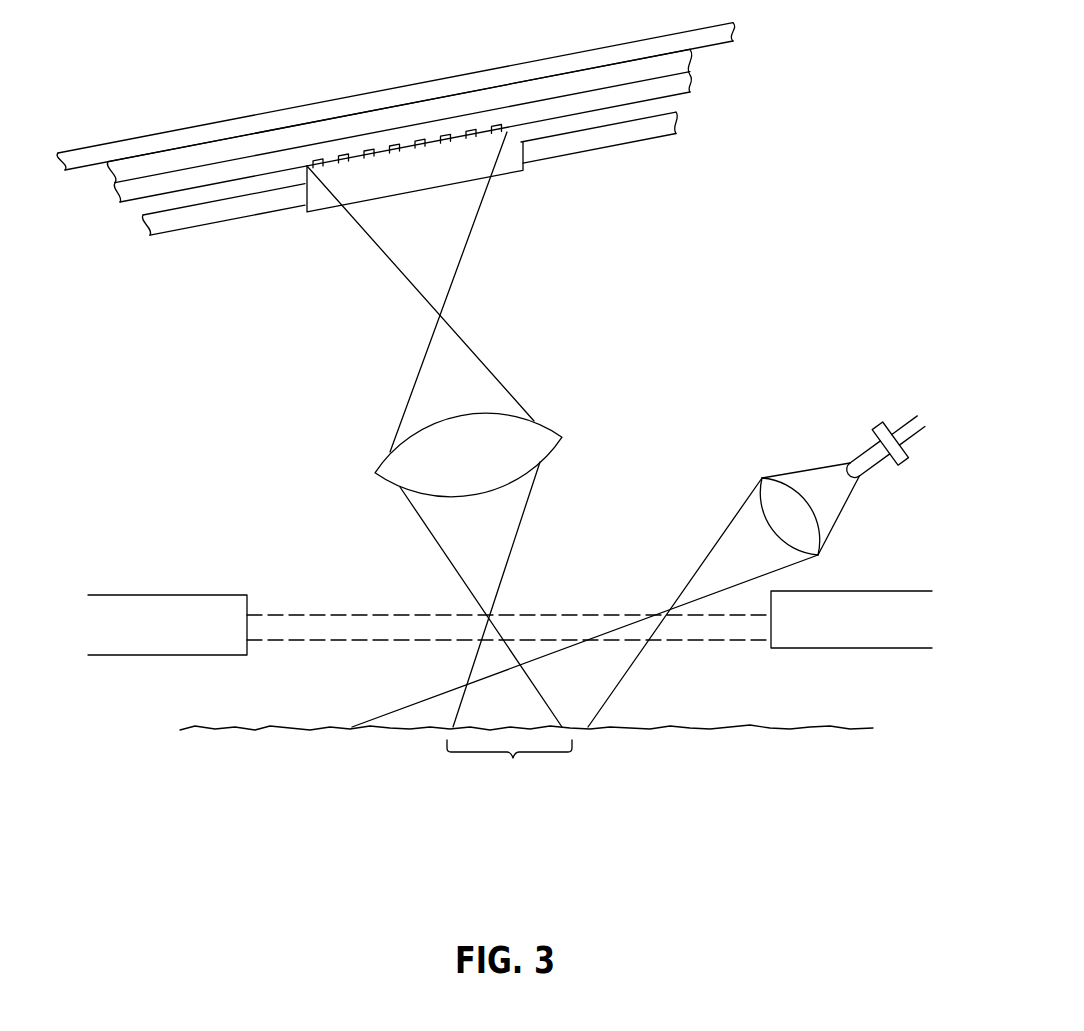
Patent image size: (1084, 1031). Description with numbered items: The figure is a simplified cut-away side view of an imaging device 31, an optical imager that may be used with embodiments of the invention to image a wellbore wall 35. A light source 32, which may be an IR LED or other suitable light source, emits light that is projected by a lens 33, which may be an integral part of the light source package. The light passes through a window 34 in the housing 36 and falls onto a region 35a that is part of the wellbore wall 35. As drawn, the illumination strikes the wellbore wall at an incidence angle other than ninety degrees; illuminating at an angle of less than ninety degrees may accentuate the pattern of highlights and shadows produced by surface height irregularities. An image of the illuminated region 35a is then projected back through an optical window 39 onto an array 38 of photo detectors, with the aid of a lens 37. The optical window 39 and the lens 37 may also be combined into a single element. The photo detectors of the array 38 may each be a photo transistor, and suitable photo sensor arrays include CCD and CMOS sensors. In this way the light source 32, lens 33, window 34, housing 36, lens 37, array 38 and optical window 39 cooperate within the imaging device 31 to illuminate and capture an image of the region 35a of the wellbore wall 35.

The imaging device 31 is at (792, 167).
The light source 32 is at (856, 454).
The lens 33 is at (762, 478).
The window 34 is at (352, 613).
The wellbore wall 35 is at (690, 727).
The region 35a is at (509, 766).
The housing 36 is at (137, 595).
The lens 37 is at (378, 468).
The array of photo detectors 38 is at (418, 143).
The optical window 39 is at (309, 206).